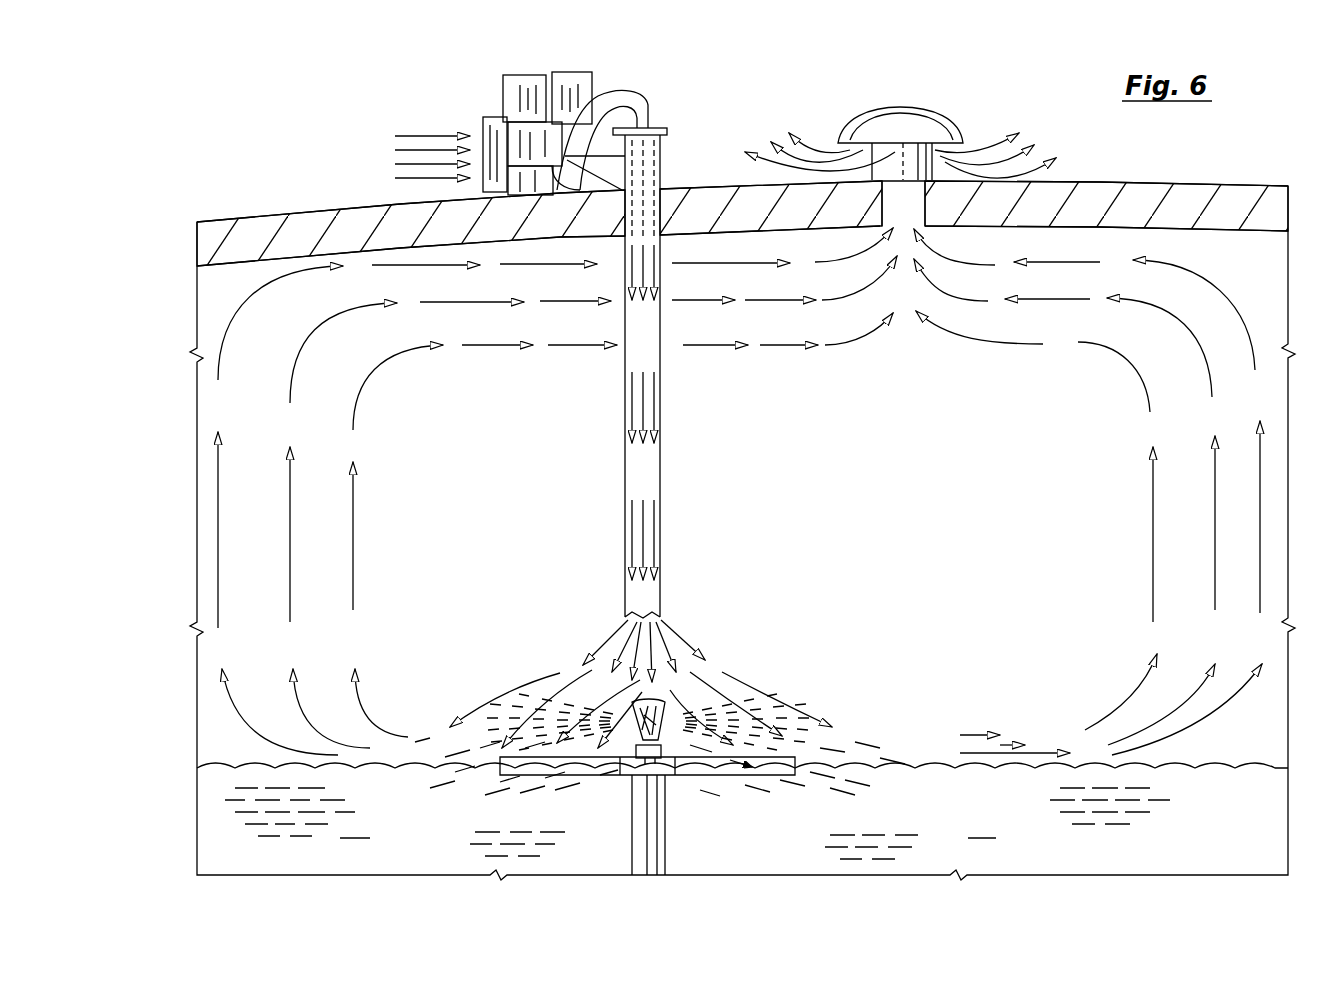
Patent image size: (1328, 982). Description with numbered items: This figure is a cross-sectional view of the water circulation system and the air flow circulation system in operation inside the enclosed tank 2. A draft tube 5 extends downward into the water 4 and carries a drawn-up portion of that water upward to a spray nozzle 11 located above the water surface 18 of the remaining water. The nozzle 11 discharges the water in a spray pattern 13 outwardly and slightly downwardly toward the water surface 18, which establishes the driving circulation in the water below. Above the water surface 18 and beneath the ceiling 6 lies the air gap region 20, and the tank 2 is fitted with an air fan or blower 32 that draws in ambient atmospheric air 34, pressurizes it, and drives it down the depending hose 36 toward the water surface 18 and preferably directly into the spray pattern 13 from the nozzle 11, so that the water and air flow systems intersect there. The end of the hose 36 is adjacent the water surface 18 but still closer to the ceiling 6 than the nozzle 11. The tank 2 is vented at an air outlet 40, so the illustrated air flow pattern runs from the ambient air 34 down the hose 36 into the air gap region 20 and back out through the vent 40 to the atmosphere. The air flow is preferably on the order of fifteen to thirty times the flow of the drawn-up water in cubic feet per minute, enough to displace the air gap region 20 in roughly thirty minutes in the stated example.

The tank 2 is at (1192, 182).
The water 4 is at (697, 823).
The draft tube 5 is at (666, 826).
The ceiling 6 is at (743, 225).
The spray nozzle 11 is at (668, 705).
The spray pattern 13 is at (544, 741).
The water surface 18 is at (213, 766).
The air gap region 20 is at (492, 512).
The blower 32 is at (497, 78).
The ambient atmospheric air 34 is at (424, 134).
The hose 36 is at (662, 420).
The vent 40 is at (926, 115).